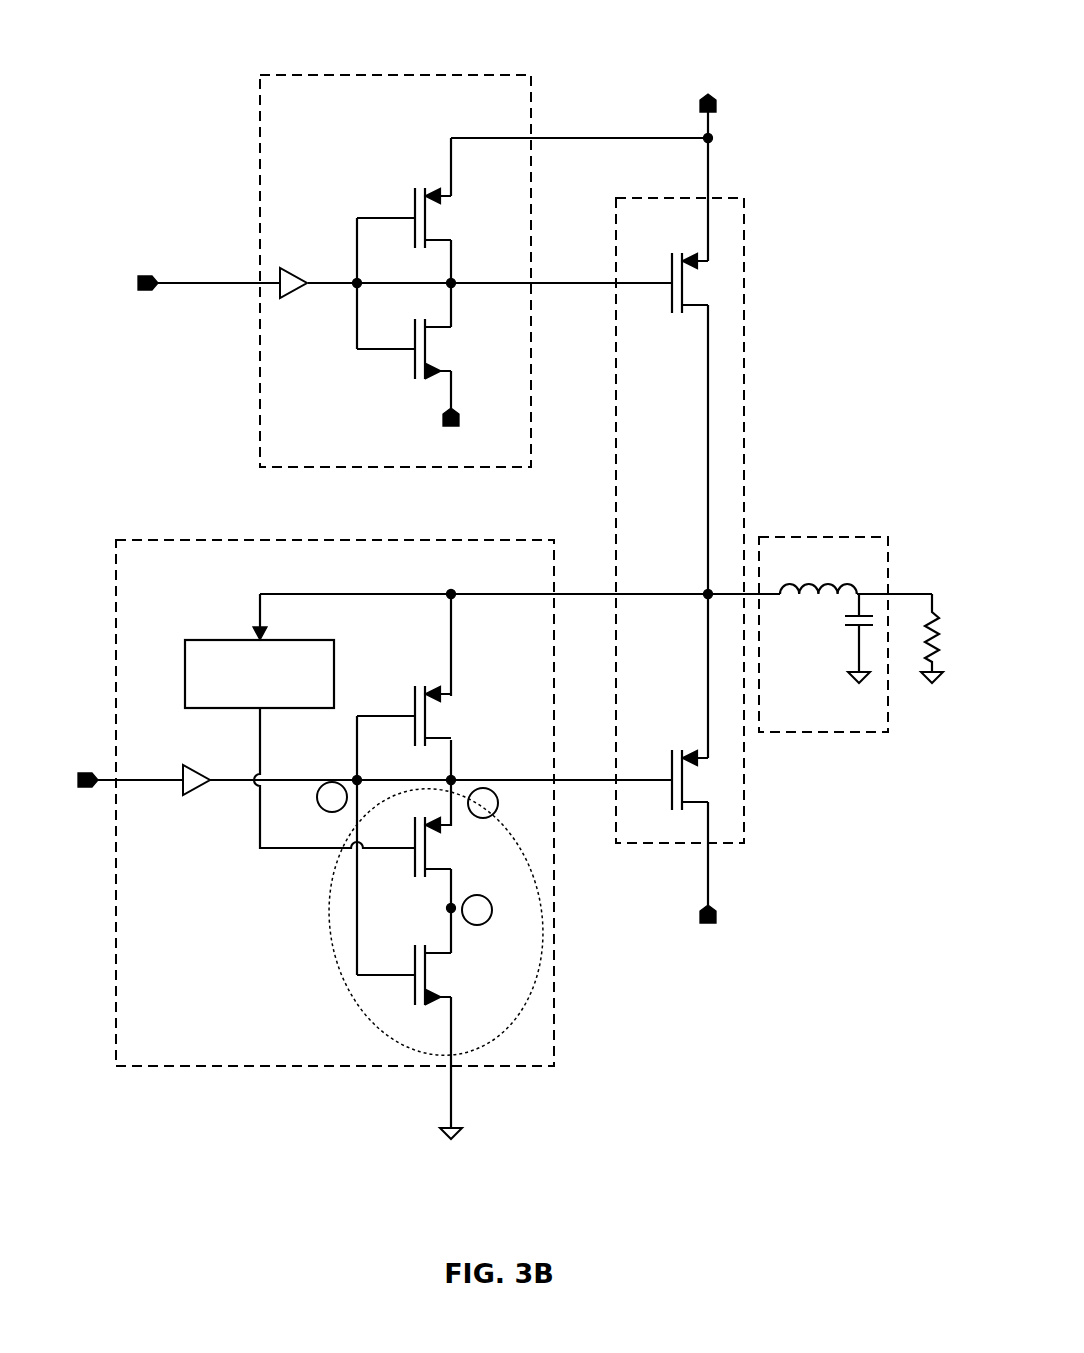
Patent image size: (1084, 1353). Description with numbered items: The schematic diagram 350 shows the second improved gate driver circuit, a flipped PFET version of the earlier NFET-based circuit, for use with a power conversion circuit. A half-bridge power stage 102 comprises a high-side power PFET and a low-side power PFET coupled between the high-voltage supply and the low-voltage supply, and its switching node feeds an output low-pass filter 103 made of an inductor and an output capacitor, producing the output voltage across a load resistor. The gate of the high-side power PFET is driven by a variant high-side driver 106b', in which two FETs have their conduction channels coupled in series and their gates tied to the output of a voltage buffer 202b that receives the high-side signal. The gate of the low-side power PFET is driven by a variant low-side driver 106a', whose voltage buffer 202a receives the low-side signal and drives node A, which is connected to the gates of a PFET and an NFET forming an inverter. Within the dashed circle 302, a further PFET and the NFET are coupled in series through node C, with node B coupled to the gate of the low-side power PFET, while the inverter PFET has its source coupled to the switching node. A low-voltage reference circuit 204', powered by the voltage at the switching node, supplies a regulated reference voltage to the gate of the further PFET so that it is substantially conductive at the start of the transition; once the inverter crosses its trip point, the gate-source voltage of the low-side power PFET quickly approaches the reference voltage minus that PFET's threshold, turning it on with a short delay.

The schematic diagram 350 is at (501, 587).
The half-bridge power stage 102 is at (743, 845).
The low-pass filter 103 is at (813, 537).
The variant low-side driver 106a' is at (375, 803).
The variant high-side driver 106b' is at (411, 271).
The voltage buffer 202a is at (190, 797).
The voltage buffer 202b is at (285, 270).
The low-voltage reference circuit 204' is at (243, 644).
The dashed circle 302 is at (330, 913).